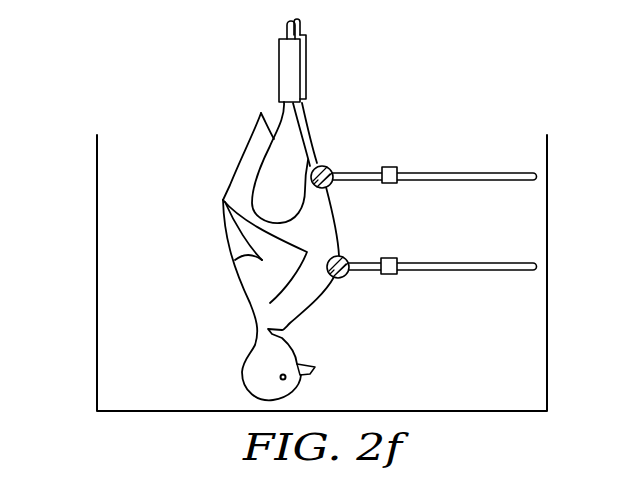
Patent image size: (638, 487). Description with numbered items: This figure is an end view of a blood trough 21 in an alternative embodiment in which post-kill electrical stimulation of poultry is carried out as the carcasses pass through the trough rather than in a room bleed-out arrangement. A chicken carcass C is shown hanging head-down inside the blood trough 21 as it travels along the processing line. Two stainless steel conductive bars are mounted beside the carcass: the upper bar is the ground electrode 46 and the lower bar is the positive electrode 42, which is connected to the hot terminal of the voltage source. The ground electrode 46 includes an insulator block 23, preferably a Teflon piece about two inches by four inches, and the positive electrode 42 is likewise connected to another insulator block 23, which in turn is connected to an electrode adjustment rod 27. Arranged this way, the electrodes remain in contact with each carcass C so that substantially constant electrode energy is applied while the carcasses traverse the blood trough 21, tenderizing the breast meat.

The blood trough 21 is at (97, 268).
The chicken carcass C is at (222, 237).
The electrode adjustment rod 27 is at (488, 172).
The insulator block 23 is at (389, 185).
The ground electrode 46 is at (331, 169).
The positive electrode 42 is at (342, 278).